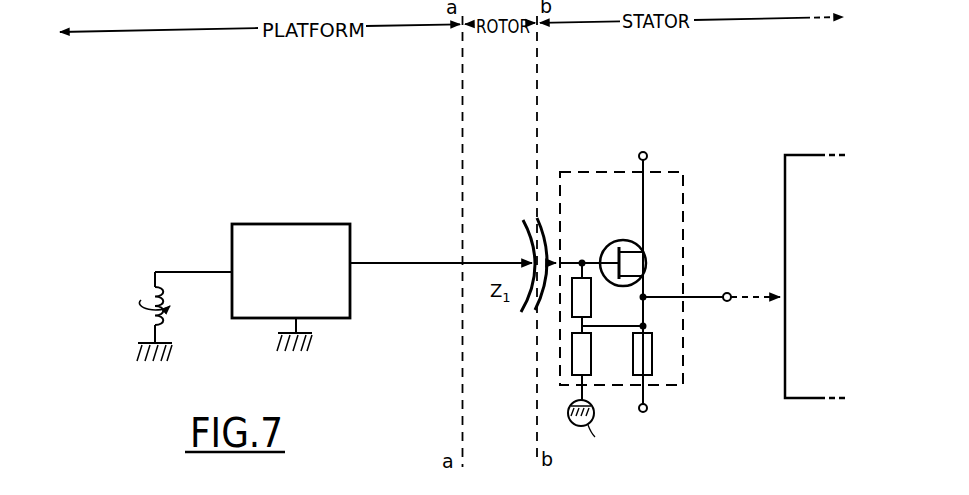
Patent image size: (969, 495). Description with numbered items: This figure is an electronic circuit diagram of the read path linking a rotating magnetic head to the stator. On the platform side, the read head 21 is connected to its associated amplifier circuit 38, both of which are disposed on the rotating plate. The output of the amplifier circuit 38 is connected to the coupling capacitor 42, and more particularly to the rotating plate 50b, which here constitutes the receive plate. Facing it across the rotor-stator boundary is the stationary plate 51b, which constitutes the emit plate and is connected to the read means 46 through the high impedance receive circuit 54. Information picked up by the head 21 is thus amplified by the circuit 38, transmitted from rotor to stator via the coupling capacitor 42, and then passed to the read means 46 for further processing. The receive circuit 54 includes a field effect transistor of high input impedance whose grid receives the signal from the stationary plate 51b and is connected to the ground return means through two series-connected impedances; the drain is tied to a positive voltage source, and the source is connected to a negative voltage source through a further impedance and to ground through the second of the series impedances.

The read head 21 is at (152, 267).
The amplifier circuit 38 is at (271, 226).
The rotating plate 50b is at (529, 236).
The stationary plate 51b is at (536, 221).
The coupling capacitor 42 is at (523, 319).
The high impedance receive circuit 54 is at (606, 166).
The read means 46 is at (818, 150).